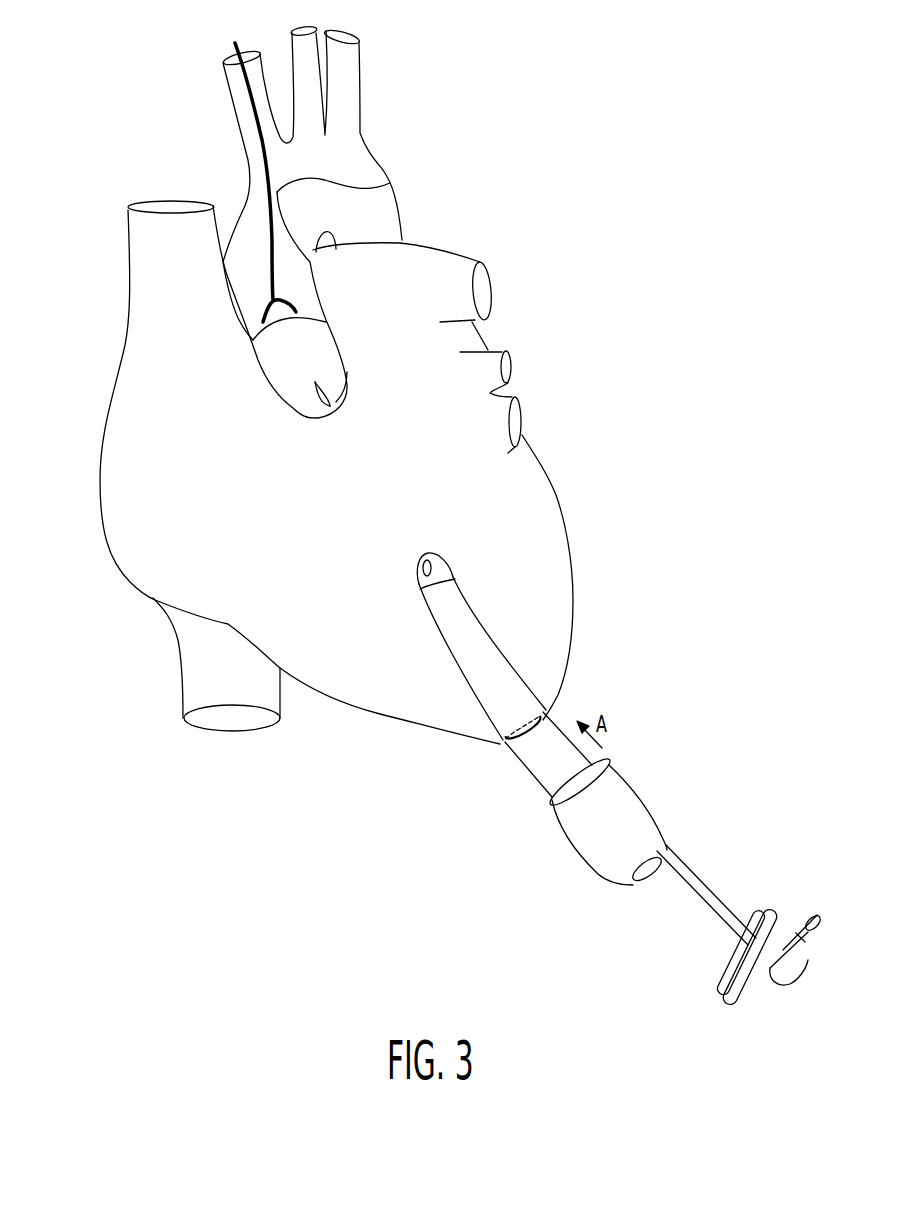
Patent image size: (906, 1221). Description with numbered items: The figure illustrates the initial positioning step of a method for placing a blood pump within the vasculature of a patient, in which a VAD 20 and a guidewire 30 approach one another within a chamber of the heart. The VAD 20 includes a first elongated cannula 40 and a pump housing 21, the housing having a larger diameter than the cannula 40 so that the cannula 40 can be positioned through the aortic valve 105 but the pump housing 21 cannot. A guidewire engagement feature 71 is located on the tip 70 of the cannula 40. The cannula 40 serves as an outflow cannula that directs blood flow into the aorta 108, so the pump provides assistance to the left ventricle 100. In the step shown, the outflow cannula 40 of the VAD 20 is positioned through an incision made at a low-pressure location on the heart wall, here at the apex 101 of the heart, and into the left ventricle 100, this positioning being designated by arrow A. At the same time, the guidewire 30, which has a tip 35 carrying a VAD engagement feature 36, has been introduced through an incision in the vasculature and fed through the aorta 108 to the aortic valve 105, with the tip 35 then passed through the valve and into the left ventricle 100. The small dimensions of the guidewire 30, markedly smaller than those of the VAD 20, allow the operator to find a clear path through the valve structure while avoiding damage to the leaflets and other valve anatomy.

The left ventricle 100 is at (343, 563).
The aorta 108 is at (243, 200).
The guidewire 30 is at (385, 186).
The tip 35 is at (273, 303).
The VAD engagement feature 36 is at (265, 312).
The aortic valve 105 is at (278, 397).
The tip 70 is at (453, 575).
The guidewire engagement feature 71 is at (430, 552).
The apex 101 is at (540, 724).
The first elongated cannula 40 is at (541, 783).
The pump housing 21 is at (640, 790).
The VAD 20 is at (678, 828).